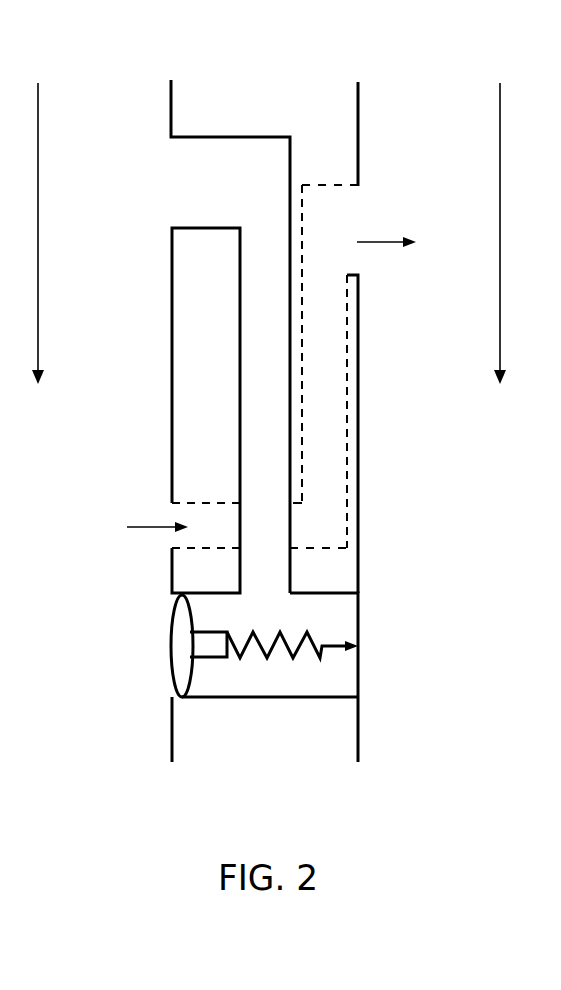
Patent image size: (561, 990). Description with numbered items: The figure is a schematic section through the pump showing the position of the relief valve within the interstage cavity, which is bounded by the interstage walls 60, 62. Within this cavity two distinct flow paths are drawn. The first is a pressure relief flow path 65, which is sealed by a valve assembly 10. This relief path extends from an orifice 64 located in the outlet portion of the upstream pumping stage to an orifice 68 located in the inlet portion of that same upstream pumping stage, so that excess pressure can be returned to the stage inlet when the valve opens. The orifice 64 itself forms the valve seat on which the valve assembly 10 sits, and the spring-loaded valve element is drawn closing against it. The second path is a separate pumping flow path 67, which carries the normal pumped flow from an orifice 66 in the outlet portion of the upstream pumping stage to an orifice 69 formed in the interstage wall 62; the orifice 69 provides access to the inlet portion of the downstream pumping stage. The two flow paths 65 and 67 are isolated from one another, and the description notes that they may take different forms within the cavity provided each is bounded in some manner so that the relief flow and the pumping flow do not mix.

The valve assembly 10 is at (338, 613).
The interstage wall 60 is at (171, 80).
The interstage wall 62 is at (358, 82).
The orifice 64 is at (175, 687).
The pressure relief flow path 65 is at (282, 404).
The orifice 66 is at (150, 527).
The pumping flow path 67 is at (342, 354).
The orifice 68 is at (184, 192).
The orifice 69 is at (387, 239).